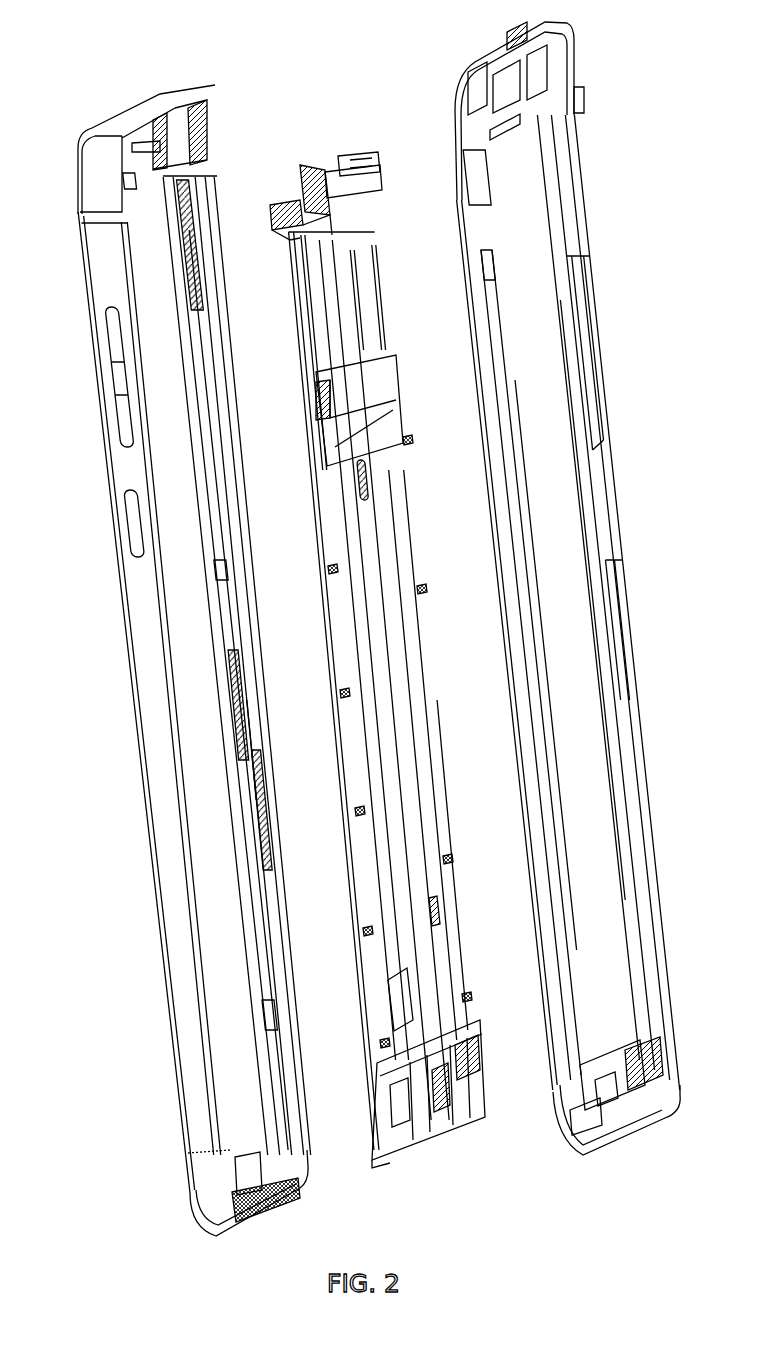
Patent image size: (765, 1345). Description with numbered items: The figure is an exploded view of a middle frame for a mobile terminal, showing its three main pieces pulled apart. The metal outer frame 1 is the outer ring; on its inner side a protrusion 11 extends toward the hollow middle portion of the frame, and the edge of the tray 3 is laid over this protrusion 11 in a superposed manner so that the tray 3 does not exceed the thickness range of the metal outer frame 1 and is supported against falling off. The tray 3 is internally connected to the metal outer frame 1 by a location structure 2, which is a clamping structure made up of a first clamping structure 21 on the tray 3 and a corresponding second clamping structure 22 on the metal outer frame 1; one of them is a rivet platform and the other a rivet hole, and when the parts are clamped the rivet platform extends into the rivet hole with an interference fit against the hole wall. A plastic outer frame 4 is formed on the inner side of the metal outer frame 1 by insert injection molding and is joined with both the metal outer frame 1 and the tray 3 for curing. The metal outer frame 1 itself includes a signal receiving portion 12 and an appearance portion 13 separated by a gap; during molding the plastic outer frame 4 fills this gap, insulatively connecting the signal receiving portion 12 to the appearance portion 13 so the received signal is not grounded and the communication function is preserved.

The metal outer frame 1 is at (195, 637).
The protrusion 11 is at (225, 602).
The signal receiving portion 12 is at (160, 95).
The appearance portion 13 is at (145, 598).
The location structure 2 is at (372, 700).
The first clamping structure 21 is at (405, 440).
The second clamping structure 22 is at (247, 743).
The tray 3 is at (323, 150).
The plastic outer frame 4 is at (463, 47).